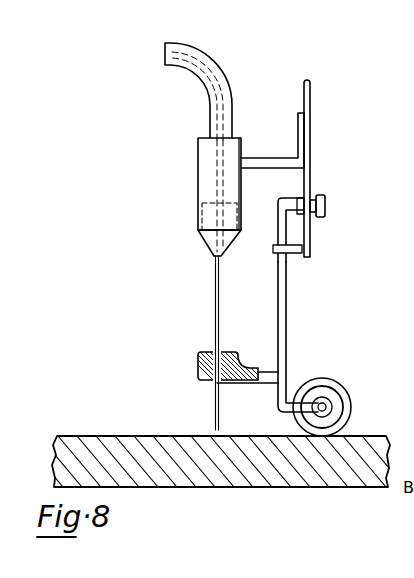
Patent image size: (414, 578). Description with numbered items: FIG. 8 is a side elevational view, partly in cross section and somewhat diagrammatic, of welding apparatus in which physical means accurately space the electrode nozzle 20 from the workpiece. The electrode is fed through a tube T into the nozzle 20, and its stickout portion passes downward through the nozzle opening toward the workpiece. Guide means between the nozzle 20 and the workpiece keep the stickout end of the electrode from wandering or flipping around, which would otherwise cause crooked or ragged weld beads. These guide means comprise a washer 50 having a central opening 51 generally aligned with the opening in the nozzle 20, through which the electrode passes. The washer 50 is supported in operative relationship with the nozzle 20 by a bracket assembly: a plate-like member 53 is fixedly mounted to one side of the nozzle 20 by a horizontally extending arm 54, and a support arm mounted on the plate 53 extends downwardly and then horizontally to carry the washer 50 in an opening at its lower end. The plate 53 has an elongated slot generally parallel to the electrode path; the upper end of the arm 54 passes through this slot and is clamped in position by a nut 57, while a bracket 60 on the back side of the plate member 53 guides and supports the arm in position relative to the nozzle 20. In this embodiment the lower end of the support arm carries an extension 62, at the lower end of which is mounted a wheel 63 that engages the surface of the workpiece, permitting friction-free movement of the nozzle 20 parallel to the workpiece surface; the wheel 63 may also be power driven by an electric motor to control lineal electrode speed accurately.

The feed tube T is at (206, 53).
The nozzle 20 is at (205, 218).
The washer 50 is at (225, 352).
The central opening 51 is at (210, 384).
The plate-like member 53 is at (311, 96).
The horizontally extending arm 54 is at (270, 158).
The nut 57 is at (326, 203).
The bracket 60 is at (297, 253).
The extension 62 is at (287, 394).
The wheel 63 is at (343, 386).